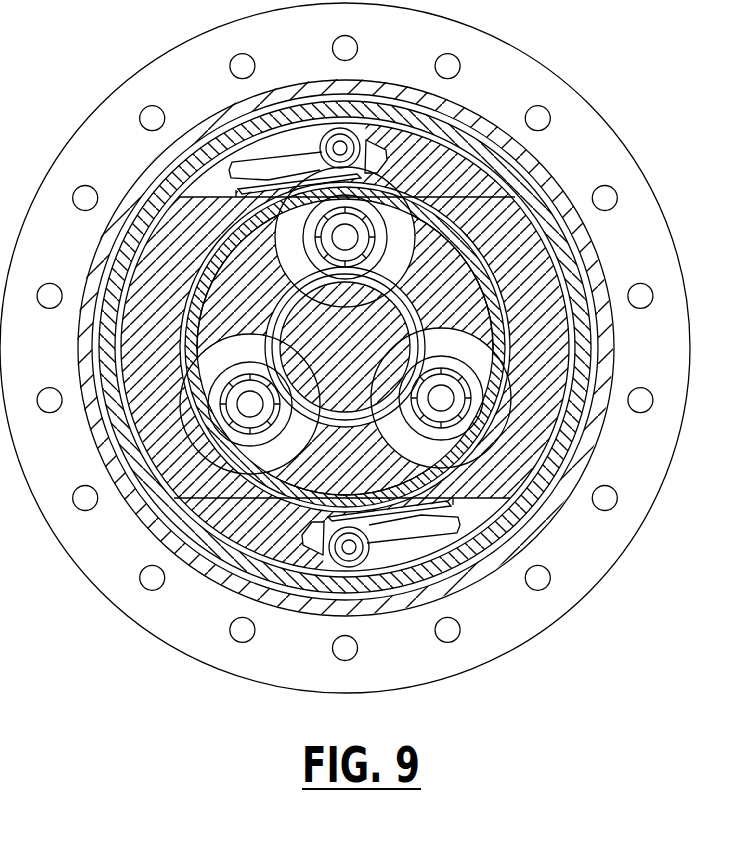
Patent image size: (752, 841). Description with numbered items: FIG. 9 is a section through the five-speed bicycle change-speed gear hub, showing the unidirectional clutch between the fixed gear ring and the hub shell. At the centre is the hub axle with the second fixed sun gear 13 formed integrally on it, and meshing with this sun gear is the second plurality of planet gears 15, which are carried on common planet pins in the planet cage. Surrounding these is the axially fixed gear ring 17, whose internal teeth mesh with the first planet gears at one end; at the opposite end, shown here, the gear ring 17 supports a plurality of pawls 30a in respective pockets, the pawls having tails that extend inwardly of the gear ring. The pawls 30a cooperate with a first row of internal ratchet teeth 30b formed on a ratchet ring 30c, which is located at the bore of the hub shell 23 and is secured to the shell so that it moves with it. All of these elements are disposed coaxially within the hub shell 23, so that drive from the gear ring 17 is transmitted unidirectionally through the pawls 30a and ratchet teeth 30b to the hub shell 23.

The second fixed sun gear 13 is at (420, 353).
The second plurality of planet gears 15 is at (362, 210).
The axially fixed gear ring 17 is at (545, 378).
The hub shell 23 is at (283, 603).
The pawls 30a is at (422, 535).
The first row of internal ratchet teeth 30b is at (473, 543).
The ratchet ring 30c is at (527, 494).